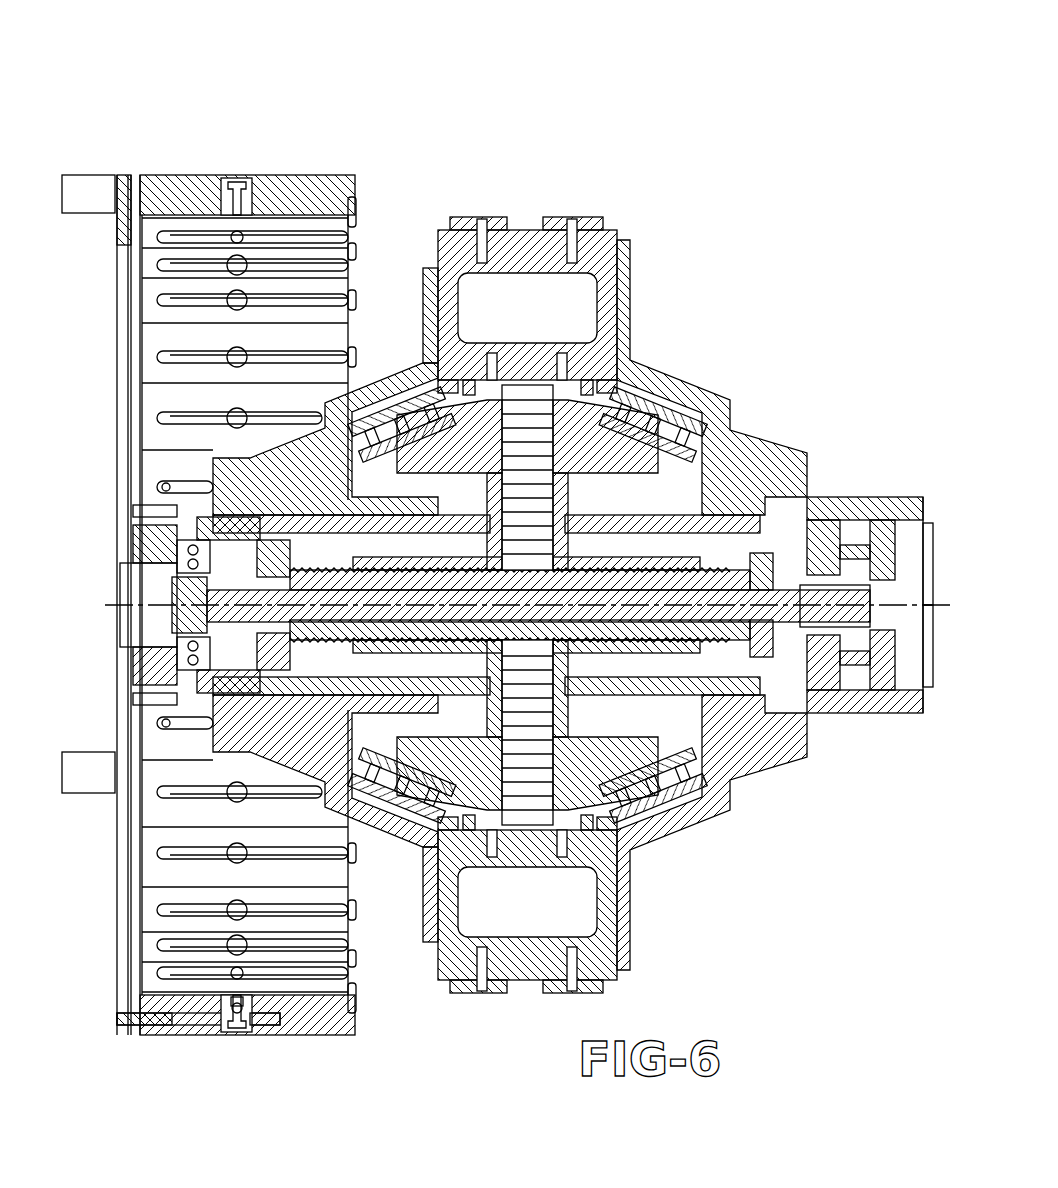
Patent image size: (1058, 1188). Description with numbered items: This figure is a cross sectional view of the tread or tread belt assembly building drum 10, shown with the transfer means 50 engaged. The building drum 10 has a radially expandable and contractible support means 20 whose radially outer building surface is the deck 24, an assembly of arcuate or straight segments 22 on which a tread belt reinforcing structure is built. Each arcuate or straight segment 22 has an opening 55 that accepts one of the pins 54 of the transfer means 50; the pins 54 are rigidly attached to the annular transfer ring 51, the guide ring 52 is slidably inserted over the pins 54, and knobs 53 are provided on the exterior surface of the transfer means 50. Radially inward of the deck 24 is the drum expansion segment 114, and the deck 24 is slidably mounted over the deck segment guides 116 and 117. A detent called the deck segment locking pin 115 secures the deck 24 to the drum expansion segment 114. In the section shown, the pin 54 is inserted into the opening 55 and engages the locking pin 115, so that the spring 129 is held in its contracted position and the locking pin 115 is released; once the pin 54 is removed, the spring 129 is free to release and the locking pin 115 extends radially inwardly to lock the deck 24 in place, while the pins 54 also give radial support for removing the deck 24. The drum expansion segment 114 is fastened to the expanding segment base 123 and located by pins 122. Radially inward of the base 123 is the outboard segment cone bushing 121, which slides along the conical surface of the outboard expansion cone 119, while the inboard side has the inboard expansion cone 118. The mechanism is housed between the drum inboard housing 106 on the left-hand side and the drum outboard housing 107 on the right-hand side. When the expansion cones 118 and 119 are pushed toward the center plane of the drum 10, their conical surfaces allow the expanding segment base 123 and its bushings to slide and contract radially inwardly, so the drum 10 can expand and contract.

The building drum 10 is at (707, 116).
The support means 20 is at (785, 775).
The arcuate or straight segments 22 is at (338, 1040).
The deck 24 is at (320, 175).
The transfer means 50 is at (120, 175).
The transfer ring 51 is at (141, 178).
The guide ring 52 is at (117, 232).
The knobs 53 is at (92, 175).
The pins 54 is at (152, 1020).
The opening 55 is at (276, 1018).
The drum inboard housing 106 is at (268, 460).
The drum outboard housing 107 is at (790, 440).
The drum expansion segment 114 is at (592, 262).
The deck segment locking pin 115 is at (238, 1015).
The deck segment guide 116 is at (593, 222).
The deck segment guide 117 is at (470, 222).
The inboard expansion cone 118 is at (470, 447).
The outboard expansion cone 119 is at (612, 455).
The outboard segment cone bushing 121 is at (700, 455).
The pins 122 is at (480, 440).
The expanding segment base 123 is at (680, 425).
The spring 129 is at (238, 1012).